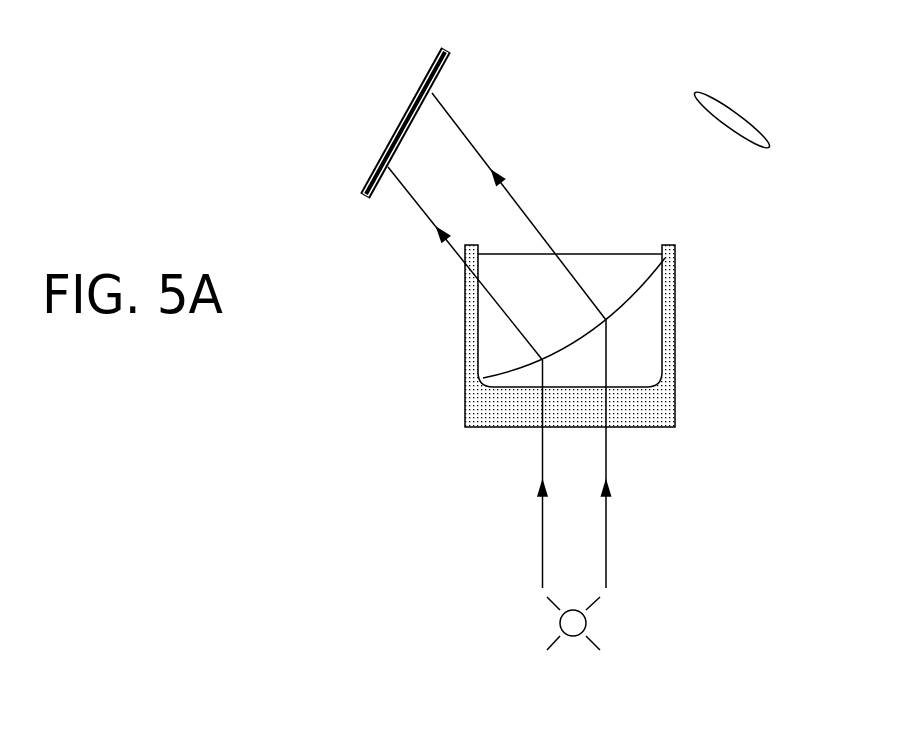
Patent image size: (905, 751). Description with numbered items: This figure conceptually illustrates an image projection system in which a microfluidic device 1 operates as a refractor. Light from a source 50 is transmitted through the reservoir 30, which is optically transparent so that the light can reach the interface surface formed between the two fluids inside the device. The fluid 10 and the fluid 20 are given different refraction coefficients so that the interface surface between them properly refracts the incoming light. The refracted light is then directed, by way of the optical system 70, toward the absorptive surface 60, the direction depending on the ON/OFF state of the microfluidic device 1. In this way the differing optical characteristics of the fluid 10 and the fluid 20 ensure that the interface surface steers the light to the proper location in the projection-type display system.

The microfluidic device 1 is at (610, 336).
The fluid 10 is at (574, 318).
The fluid 20 is at (570, 269).
The reservoir 30 is at (658, 413).
The source 50 is at (599, 623).
The absorptive surface 60 is at (403, 123).
The optical system 70 is at (746, 128).